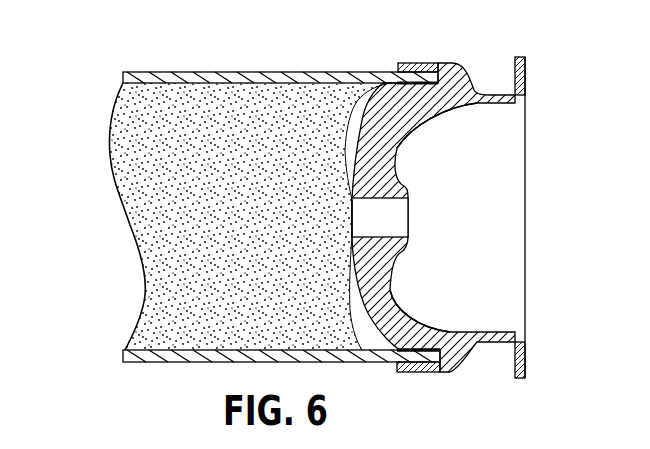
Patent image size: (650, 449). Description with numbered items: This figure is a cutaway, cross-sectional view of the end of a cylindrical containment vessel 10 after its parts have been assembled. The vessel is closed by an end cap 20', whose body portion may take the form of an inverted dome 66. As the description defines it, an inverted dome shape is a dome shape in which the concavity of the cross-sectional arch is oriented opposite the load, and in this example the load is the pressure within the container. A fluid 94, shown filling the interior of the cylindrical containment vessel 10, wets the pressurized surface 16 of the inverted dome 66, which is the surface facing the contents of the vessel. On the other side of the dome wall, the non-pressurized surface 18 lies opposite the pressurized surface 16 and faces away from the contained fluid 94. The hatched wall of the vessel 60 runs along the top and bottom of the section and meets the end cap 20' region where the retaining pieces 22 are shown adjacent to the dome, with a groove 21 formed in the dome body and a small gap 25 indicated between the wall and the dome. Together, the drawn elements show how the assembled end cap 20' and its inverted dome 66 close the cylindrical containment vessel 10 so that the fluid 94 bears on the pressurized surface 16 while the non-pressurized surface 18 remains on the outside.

The cylindrical containment vessel 10 is at (148, 62).
The tubular wall 60 is at (240, 71).
The retainer 22 is at (413, 62).
The end cap 20' is at (551, 200).
The gap 25 is at (364, 114).
The inverted dome 66 is at (368, 155).
The groove 21 is at (395, 222).
The non-pressurized surface 18 is at (418, 323).
The fluid 94 is at (187, 187).
The pressurized surface 16 is at (363, 310).